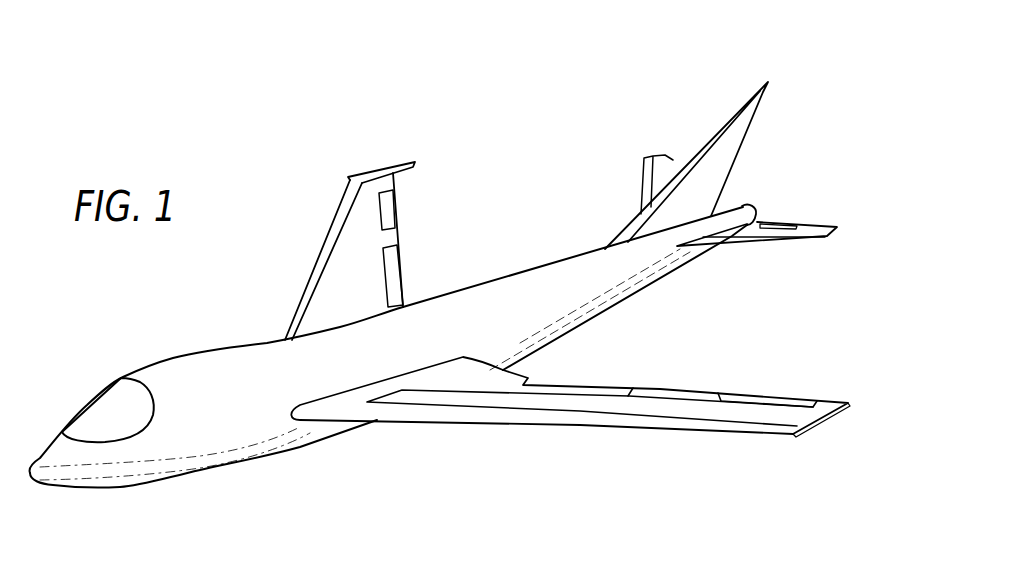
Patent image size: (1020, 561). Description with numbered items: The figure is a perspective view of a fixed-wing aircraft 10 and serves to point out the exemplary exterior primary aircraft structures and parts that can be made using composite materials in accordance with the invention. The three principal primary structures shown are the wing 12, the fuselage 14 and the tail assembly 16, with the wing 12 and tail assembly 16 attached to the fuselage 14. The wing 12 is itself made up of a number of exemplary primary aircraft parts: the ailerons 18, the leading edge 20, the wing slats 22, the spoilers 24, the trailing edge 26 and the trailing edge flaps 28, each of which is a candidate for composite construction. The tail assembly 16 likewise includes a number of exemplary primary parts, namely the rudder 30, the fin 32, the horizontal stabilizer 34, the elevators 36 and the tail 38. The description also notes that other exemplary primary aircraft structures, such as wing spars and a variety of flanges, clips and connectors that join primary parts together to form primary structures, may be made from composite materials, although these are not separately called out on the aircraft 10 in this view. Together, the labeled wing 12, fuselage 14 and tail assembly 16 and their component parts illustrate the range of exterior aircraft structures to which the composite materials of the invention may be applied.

The fixed-wing aircraft 10 is at (440, 455).
The wing 12 is at (658, 400).
The fuselage 14 is at (562, 277).
The tail assembly 16 is at (680, 30).
The ailerons 18 is at (748, 400).
The leading edge 20 is at (317, 268).
The wing slats 22 is at (347, 222).
The spoilers 24 is at (383, 168).
The trailing edge 26 is at (398, 237).
The trailing edge flaps 28 is at (393, 273).
The rudder 30 is at (752, 122).
The fin 32 is at (700, 163).
The horizontal stabilizer 34 is at (750, 240).
The elevators 36 is at (797, 225).
The tail 38 is at (744, 208).